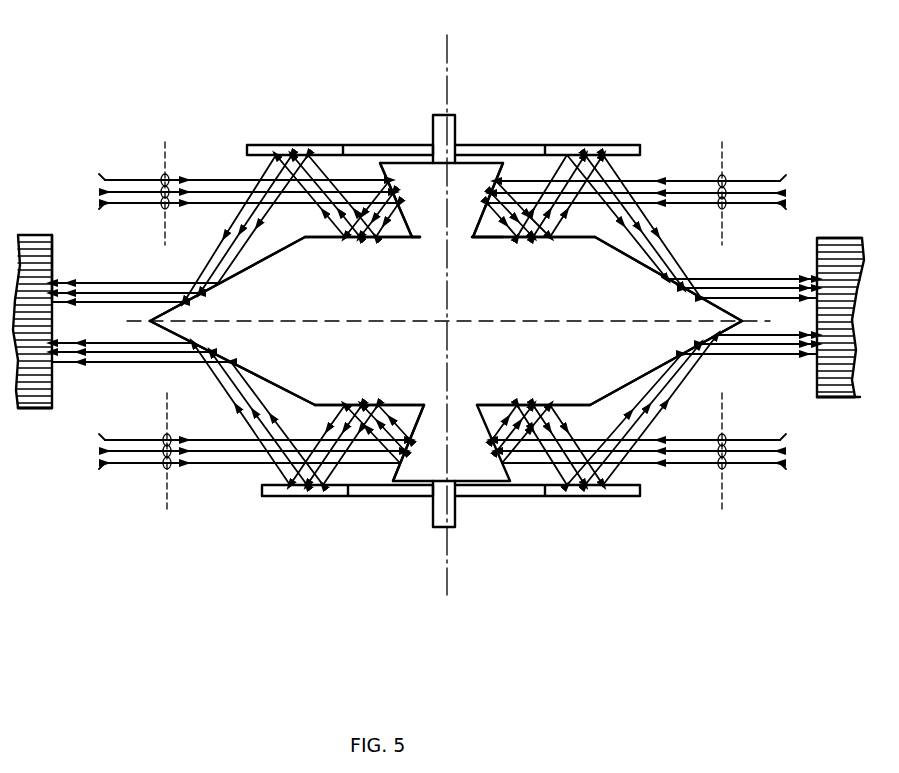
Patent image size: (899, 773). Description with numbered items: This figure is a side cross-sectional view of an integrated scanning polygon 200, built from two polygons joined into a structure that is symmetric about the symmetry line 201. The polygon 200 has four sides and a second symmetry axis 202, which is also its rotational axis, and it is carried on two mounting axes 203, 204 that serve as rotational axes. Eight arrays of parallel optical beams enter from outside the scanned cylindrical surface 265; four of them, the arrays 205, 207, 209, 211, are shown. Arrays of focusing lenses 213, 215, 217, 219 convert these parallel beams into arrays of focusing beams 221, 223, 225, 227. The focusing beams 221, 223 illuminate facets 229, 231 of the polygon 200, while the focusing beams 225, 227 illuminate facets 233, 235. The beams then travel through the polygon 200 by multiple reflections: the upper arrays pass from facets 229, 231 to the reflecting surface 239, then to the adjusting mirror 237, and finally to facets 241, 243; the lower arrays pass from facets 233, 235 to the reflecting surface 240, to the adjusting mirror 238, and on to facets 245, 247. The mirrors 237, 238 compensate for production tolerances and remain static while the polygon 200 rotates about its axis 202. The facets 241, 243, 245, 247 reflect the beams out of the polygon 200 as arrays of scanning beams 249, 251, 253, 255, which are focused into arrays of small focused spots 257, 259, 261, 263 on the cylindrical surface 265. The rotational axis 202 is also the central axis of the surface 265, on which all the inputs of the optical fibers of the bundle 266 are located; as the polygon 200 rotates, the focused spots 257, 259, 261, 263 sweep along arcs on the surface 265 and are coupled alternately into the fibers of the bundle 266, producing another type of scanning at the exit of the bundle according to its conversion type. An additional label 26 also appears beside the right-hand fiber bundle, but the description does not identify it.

The workpiece 26 is at (840, 300).
The integrated scanning polygon 200 is at (470, 175).
The symmetry line 201 is at (570, 318).
The symmetry axis 202 is at (449, 42).
The mounting axis 203 is at (452, 113).
The mounting axis 204 is at (440, 522).
The array of parallel optical beams 205 is at (781, 184).
The array of parallel optical beams 207 is at (103, 184).
The array of parallel optical beams 209 is at (778, 450).
The array of parallel optical beams 211 is at (103, 458).
The array of focusing lenses 213 is at (728, 178).
The array of focusing lenses 215 is at (160, 180).
The array of focusing lenses 217 is at (728, 468).
The array of focusing lenses 219 is at (162, 466).
The array of focusing beams 221 is at (712, 200).
The array of focusing beams 223 is at (197, 215).
The array of focusing beams 225 is at (700, 455).
The array of focusing beams 227 is at (220, 435).
The facet 229 is at (468, 238).
The facet 231 is at (428, 240).
The facet 233 is at (480, 403).
The facet 235 is at (428, 403).
The adjusting mirror 237 is at (298, 143).
The adjusting mirror 238 is at (300, 498).
The reflecting surface 239 is at (343, 240).
The reflecting surface 240 is at (343, 402).
The facet 241 is at (665, 289).
The facet 243 is at (242, 281).
The facet 245 is at (662, 373).
The facet 247 is at (248, 367).
The array of scanning beams 249 is at (762, 300).
The array of scanning beams 251 is at (135, 300).
The array of scanning beams 253 is at (733, 345).
The array of scanning beams 255 is at (137, 348).
The array of focused spots 257 is at (826, 238).
The array of focused spots 259 is at (48, 298).
The array of focused spots 261 is at (843, 340).
The array of focused spots 263 is at (46, 345).
The cylindrical surface 265 is at (52, 407).
The optical fiber bundle 266 is at (53, 256).